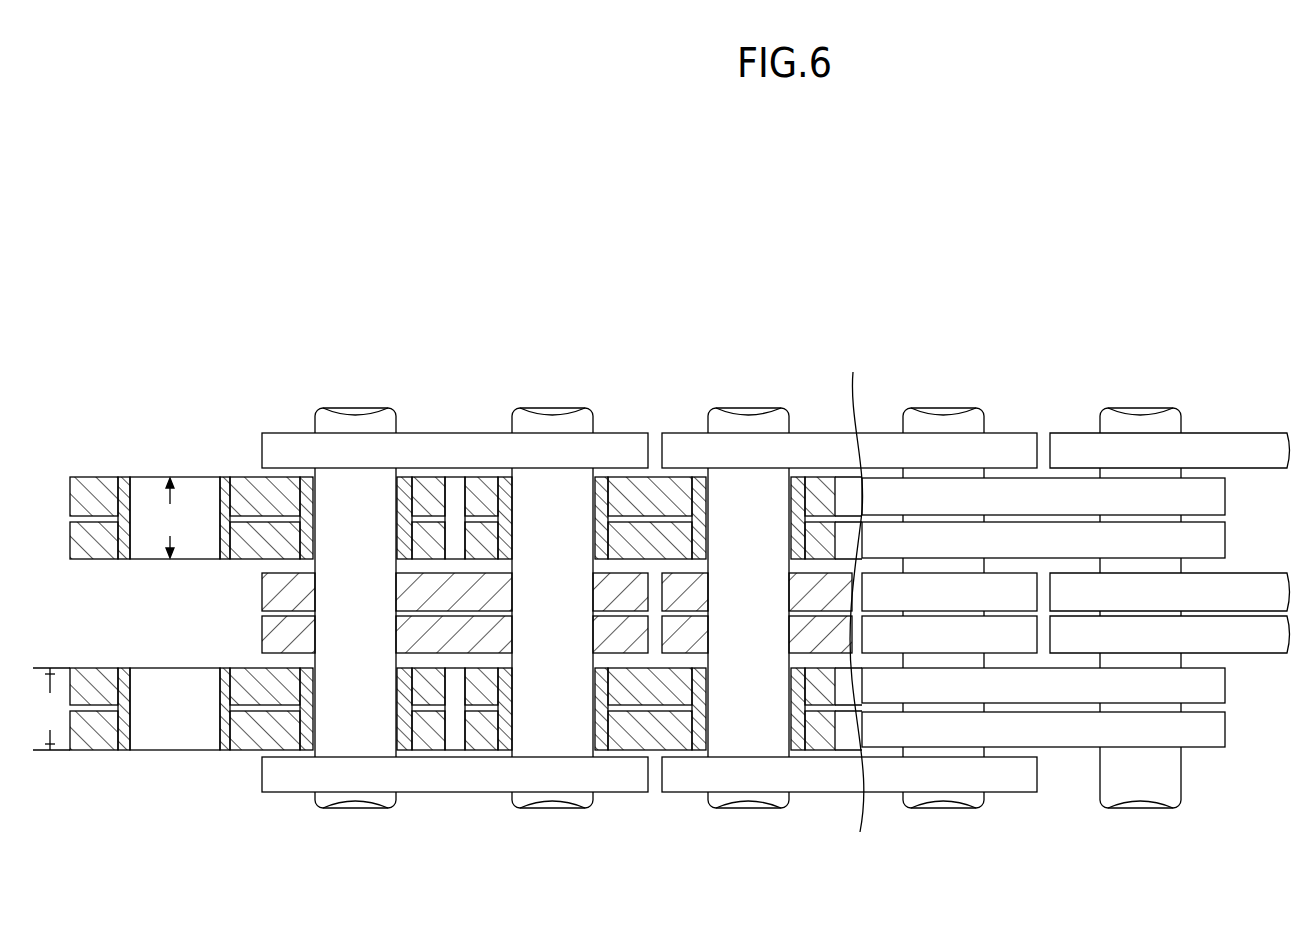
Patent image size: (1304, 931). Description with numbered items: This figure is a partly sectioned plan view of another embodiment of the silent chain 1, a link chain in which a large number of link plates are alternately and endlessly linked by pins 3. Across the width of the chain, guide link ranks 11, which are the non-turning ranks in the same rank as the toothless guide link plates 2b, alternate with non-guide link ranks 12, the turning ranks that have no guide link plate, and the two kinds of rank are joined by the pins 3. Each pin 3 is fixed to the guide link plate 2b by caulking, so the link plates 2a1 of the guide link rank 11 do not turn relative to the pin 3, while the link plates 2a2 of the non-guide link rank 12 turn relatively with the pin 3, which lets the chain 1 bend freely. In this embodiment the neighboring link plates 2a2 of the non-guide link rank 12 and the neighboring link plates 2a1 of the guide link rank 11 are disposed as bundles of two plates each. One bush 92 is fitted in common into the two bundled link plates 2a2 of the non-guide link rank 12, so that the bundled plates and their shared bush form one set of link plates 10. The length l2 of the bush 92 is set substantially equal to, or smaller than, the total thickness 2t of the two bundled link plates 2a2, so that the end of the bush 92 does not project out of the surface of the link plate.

The silent chain 1 is at (688, 300).
The guide link rank 11 is at (447, 392).
The non-guide link rank 12 is at (179, 414).
The link plate of the guide link rank 2a1 is at (265, 584).
The link plate of the non-guide link rank 2a2 is at (88, 483).
The guide link plate 2b is at (484, 436).
The pin 3 is at (352, 414).
The bush 92 is at (135, 494).
The set of link plates 10 is at (60, 477).
The length of the bush l2 is at (172, 518).
The total thickness of the two bundled link plates 2t is at (50, 709).